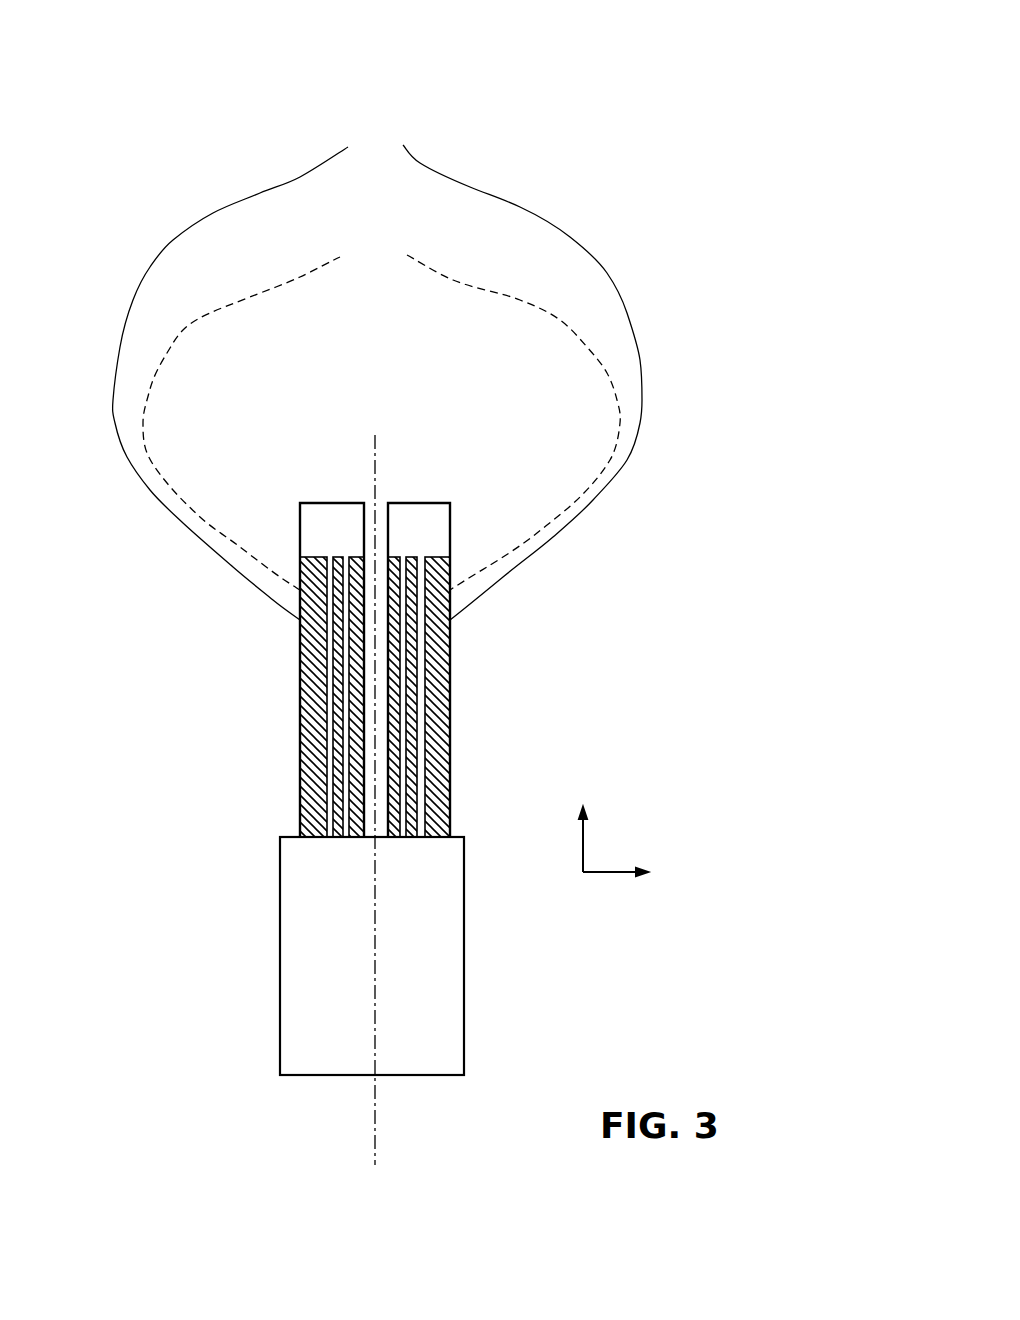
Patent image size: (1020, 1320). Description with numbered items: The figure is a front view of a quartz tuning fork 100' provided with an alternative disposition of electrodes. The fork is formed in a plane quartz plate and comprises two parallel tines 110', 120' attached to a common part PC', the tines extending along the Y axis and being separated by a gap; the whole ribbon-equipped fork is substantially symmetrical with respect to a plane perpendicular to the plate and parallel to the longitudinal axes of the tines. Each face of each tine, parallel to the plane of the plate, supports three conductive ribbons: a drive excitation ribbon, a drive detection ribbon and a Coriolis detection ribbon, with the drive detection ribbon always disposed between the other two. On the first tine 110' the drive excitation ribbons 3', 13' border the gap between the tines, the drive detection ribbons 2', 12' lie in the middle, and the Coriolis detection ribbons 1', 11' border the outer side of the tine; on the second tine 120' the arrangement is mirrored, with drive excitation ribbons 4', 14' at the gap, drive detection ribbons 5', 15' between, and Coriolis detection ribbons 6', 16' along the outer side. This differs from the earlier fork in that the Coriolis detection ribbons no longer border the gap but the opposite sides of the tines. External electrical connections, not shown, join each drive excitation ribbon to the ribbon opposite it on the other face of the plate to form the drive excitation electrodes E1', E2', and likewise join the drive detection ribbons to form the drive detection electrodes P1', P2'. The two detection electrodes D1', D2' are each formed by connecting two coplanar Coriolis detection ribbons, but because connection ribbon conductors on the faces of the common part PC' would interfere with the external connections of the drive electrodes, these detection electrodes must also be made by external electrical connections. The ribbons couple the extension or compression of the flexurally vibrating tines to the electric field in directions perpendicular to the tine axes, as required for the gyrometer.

The tuning fork 100' is at (414, 613).
The tine 110' is at (227, 599).
The tine 120' is at (527, 599).
The common part PC' is at (317, 956).
The detection electrode D1' is at (377, 348).
The detection electrode D2' is at (381, 386).
The drive excitation electrode E1' is at (315, 576).
The drive excitation electrode E2' is at (440, 576).
The drive detection electrode P1' is at (257, 603).
The drive detection electrode P2' is at (500, 603).
The Coriolis detection ribbon 1' is at (239, 370).
The Coriolis detection ribbon 6' is at (518, 370).
The Coriolis detection ribbon 11' is at (254, 409).
The Coriolis detection ribbon 16' is at (507, 409).
The drive detection ribbon 2' is at (259, 629).
The drive detection ribbon 12' is at (284, 629).
The drive excitation ribbon 3' is at (318, 599).
The drive excitation ribbon 13' is at (348, 599).
The drive excitation ribbon 4' is at (406, 599).
The drive excitation ribbon 14' is at (438, 599).
The drive detection ribbon 5' is at (467, 629).
The drive detection ribbon 15' is at (501, 629).